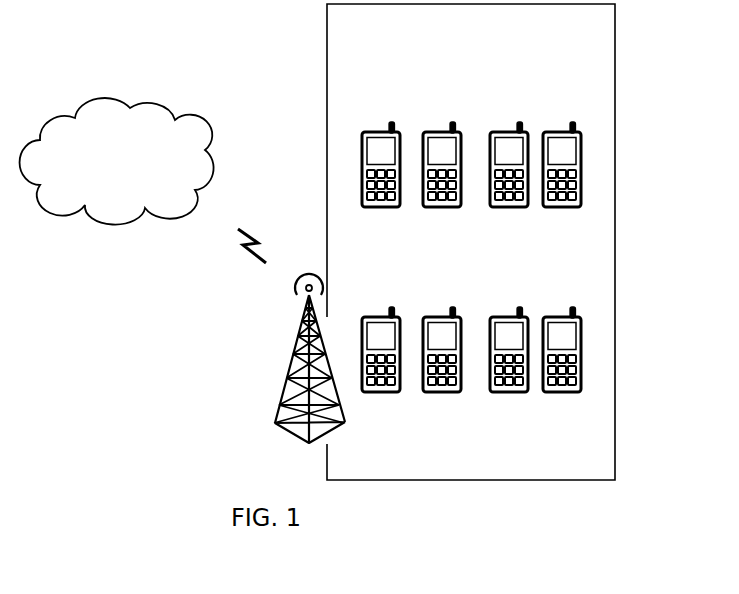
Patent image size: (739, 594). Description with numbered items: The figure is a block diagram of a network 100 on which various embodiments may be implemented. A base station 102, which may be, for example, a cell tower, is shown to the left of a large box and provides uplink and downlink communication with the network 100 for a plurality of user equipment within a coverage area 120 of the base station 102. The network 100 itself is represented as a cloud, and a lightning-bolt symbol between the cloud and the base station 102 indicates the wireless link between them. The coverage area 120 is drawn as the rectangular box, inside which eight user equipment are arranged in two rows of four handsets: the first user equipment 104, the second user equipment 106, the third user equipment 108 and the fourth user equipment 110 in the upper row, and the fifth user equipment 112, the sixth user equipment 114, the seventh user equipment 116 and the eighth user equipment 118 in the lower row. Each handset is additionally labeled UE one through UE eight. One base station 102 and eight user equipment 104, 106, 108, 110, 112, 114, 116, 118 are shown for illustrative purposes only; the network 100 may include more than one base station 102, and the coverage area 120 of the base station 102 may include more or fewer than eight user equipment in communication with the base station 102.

The network 100 is at (117, 161).
The base station 102 is at (277, 415).
The user equipment 104 is at (375, 128).
The user equipment 106 is at (438, 128).
The user equipment 108 is at (504, 128).
The user equipment 110 is at (558, 128).
The user equipment 112 is at (380, 393).
The user equipment 114 is at (443, 393).
The user equipment 116 is at (509, 393).
The user equipment 118 is at (562, 393).
The coverage area 120 is at (471, 242).